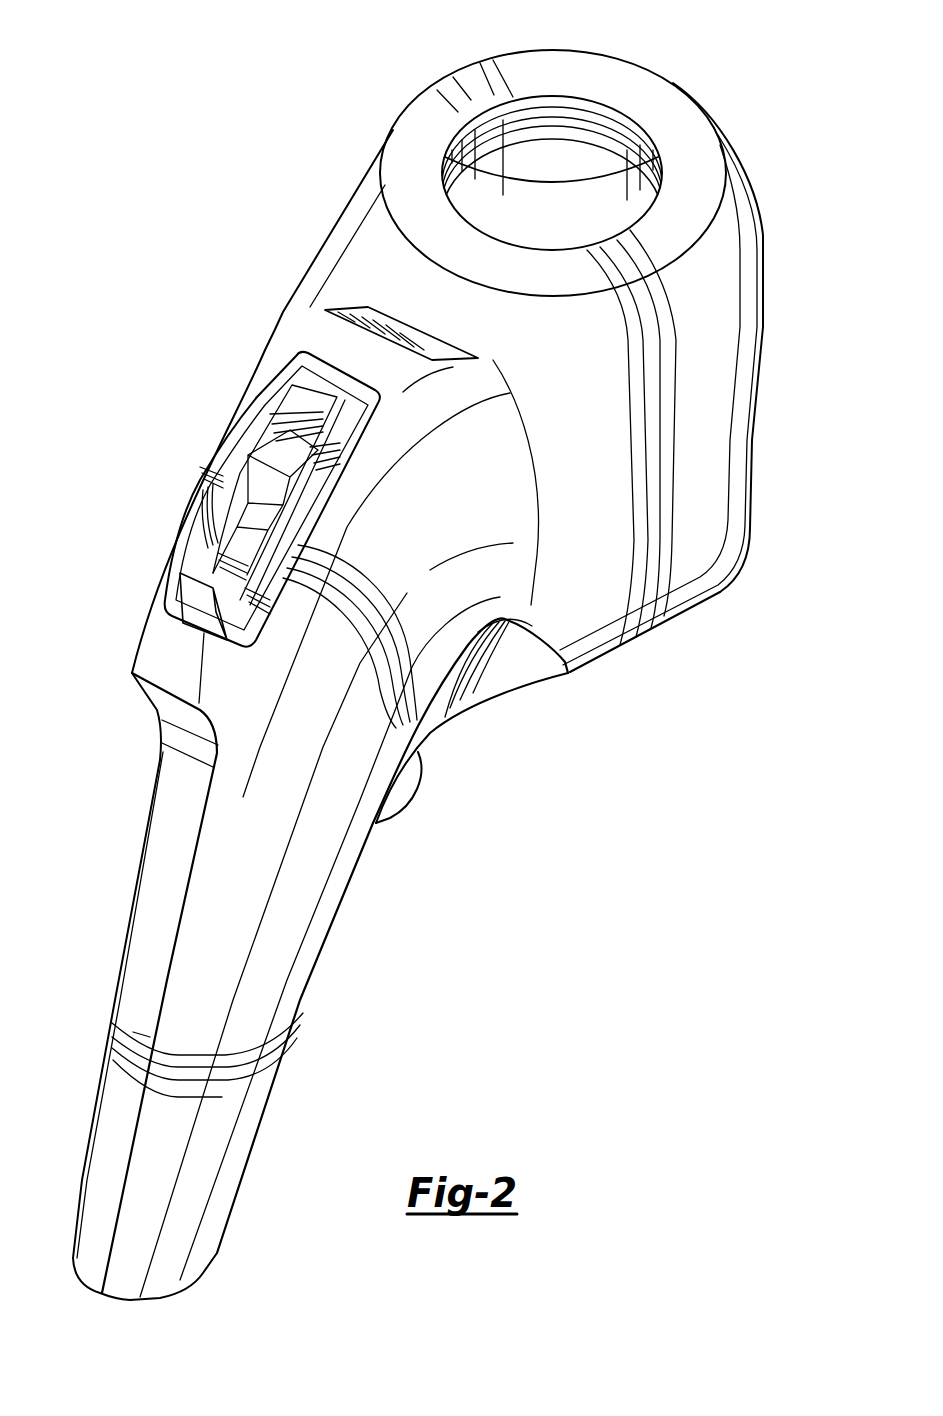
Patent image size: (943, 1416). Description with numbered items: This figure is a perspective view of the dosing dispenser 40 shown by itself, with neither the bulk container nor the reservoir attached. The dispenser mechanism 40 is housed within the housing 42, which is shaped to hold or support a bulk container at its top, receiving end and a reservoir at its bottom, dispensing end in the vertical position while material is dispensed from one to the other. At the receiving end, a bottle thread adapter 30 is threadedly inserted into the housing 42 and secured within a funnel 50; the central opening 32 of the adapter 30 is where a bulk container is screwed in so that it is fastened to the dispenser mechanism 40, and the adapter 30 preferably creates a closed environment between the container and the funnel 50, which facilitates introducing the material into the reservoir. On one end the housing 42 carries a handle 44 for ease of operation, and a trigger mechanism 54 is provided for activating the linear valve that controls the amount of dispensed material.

The bottle thread adapter 30 is at (673, 113).
The bore 32 is at (587, 110).
The dosing dispenser 40 is at (756, 455).
The housing 42 is at (740, 352).
The handle 44 is at (250, 1147).
The trigger mechanism 54 is at (407, 800).
The funnel 50 is at (272, 499).